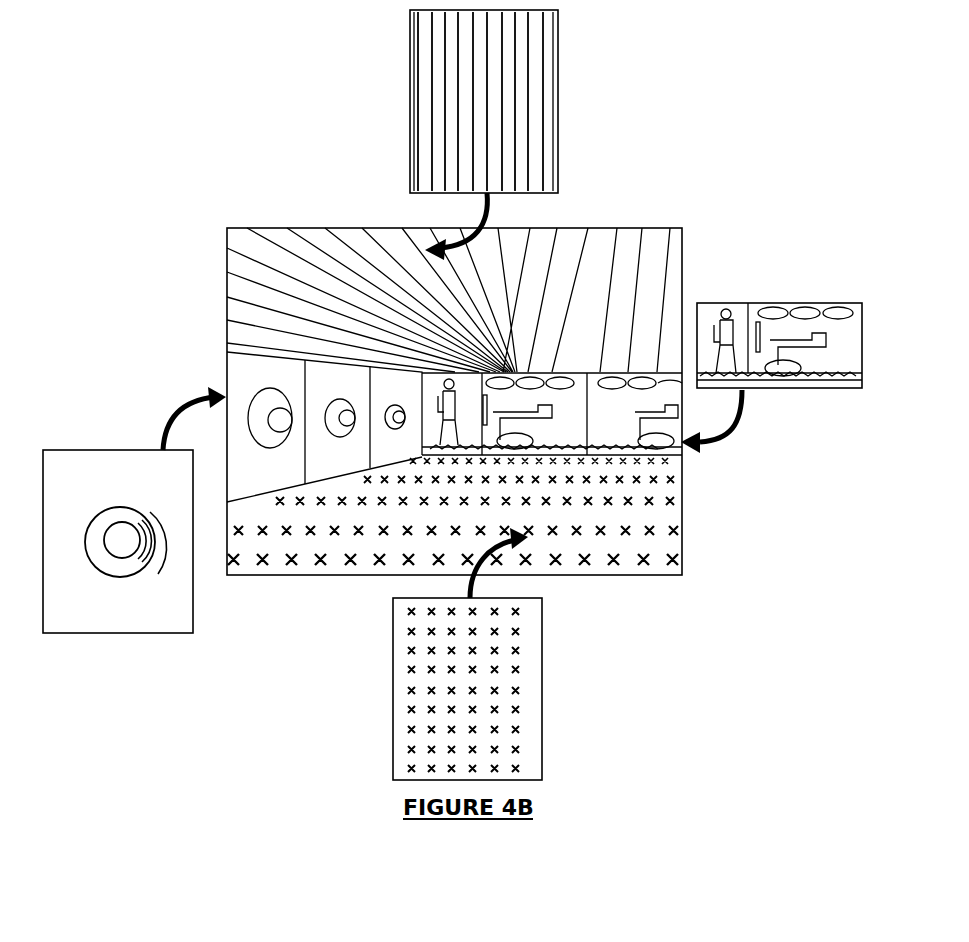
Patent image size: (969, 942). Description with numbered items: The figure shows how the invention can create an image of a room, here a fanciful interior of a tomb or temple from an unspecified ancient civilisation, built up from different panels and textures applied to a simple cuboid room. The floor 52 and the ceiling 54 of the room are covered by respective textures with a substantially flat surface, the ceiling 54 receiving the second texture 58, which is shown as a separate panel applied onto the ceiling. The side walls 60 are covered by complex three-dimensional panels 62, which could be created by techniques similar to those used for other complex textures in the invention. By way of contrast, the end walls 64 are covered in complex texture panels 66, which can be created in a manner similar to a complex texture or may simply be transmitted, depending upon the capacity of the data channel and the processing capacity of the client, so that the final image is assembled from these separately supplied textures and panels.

The floor 52 is at (563, 543).
The ceiling 54 is at (647, 228).
The second texture 58 is at (552, 160).
The side walls 60 is at (240, 383).
The complex three-dimensional panels 62 is at (340, 372).
The end walls 64 is at (655, 398).
The complex texture panels 66 is at (742, 303).